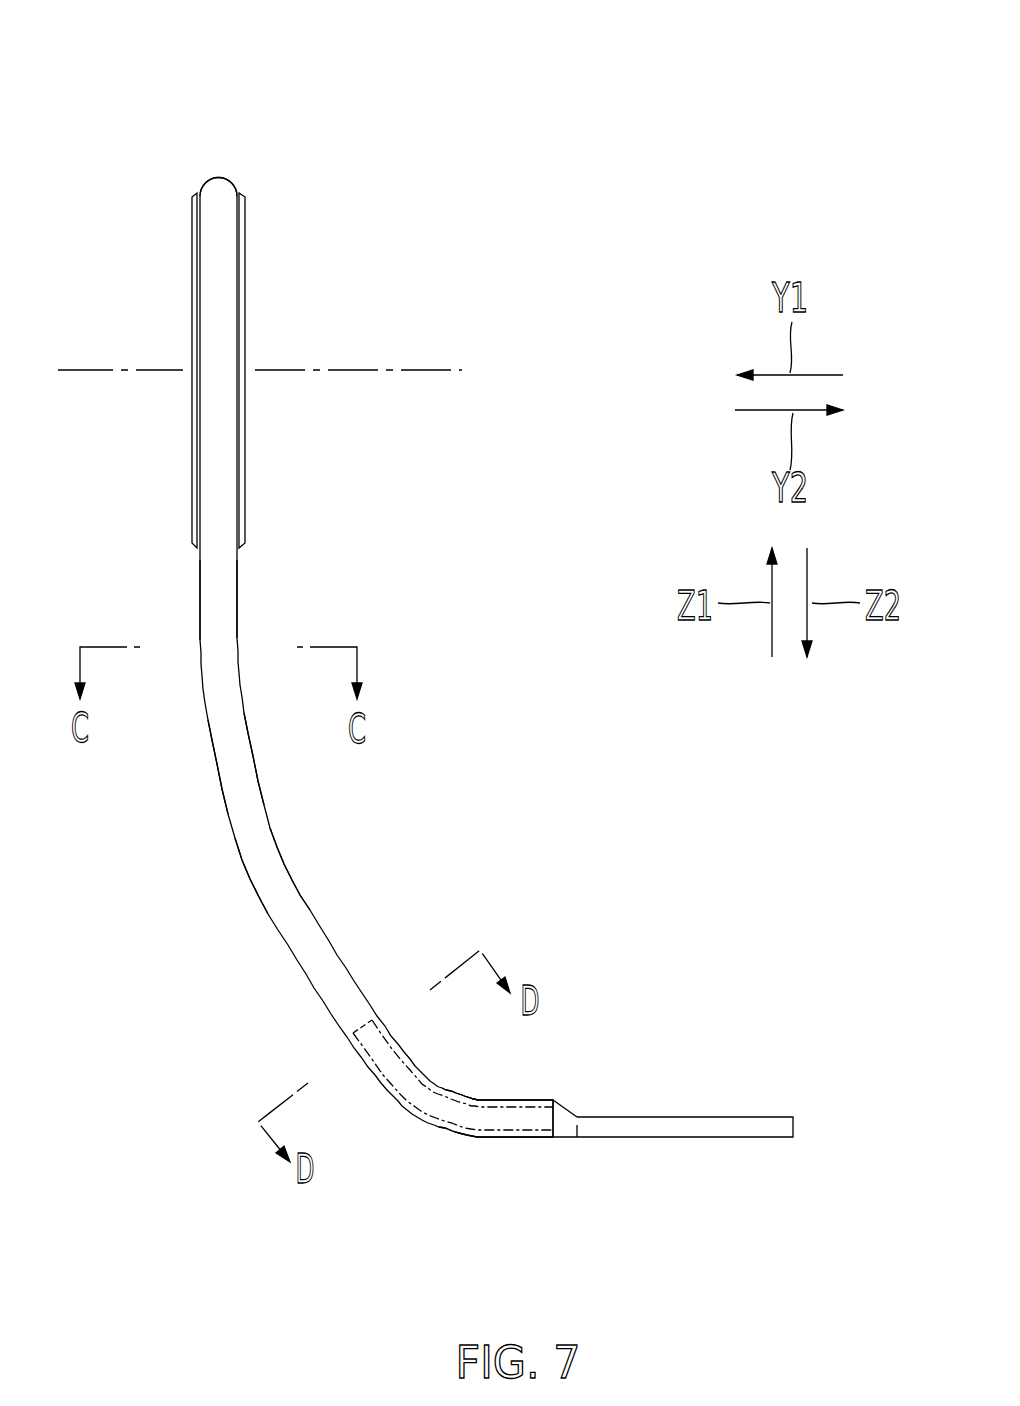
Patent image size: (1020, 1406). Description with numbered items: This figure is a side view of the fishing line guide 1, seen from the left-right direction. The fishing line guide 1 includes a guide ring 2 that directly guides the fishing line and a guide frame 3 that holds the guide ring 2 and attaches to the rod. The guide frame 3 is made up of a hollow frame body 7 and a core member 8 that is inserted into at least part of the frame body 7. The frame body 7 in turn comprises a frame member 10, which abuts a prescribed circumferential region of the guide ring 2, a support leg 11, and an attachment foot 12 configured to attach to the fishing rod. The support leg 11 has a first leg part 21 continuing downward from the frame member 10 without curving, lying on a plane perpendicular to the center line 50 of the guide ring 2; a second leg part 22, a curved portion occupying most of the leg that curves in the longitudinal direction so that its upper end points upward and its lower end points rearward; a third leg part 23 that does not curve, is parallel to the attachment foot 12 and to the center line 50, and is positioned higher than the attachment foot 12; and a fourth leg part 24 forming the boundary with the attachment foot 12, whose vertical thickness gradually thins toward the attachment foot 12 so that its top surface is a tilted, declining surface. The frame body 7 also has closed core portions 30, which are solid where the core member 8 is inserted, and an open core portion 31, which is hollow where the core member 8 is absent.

The fishing line guide 1 is at (592, 243).
The frame member 10 is at (218, 178).
The guide ring 2 is at (246, 340).
The center line of the guide ring 50 is at (435, 365).
The first leg part 21 is at (200, 583).
The guide frame 3 is at (238, 583).
The open core portion 31 is at (209, 763).
The frame body 7 is at (253, 767).
The second leg part 22 is at (283, 876).
The support leg 11 is at (243, 875).
The core member 8 is at (412, 1123).
The closed core portion 30 is at (469, 1137).
The third leg part 23 is at (531, 1138).
The fourth leg part 24 is at (575, 1100).
The attachment foot 12 is at (683, 1117).